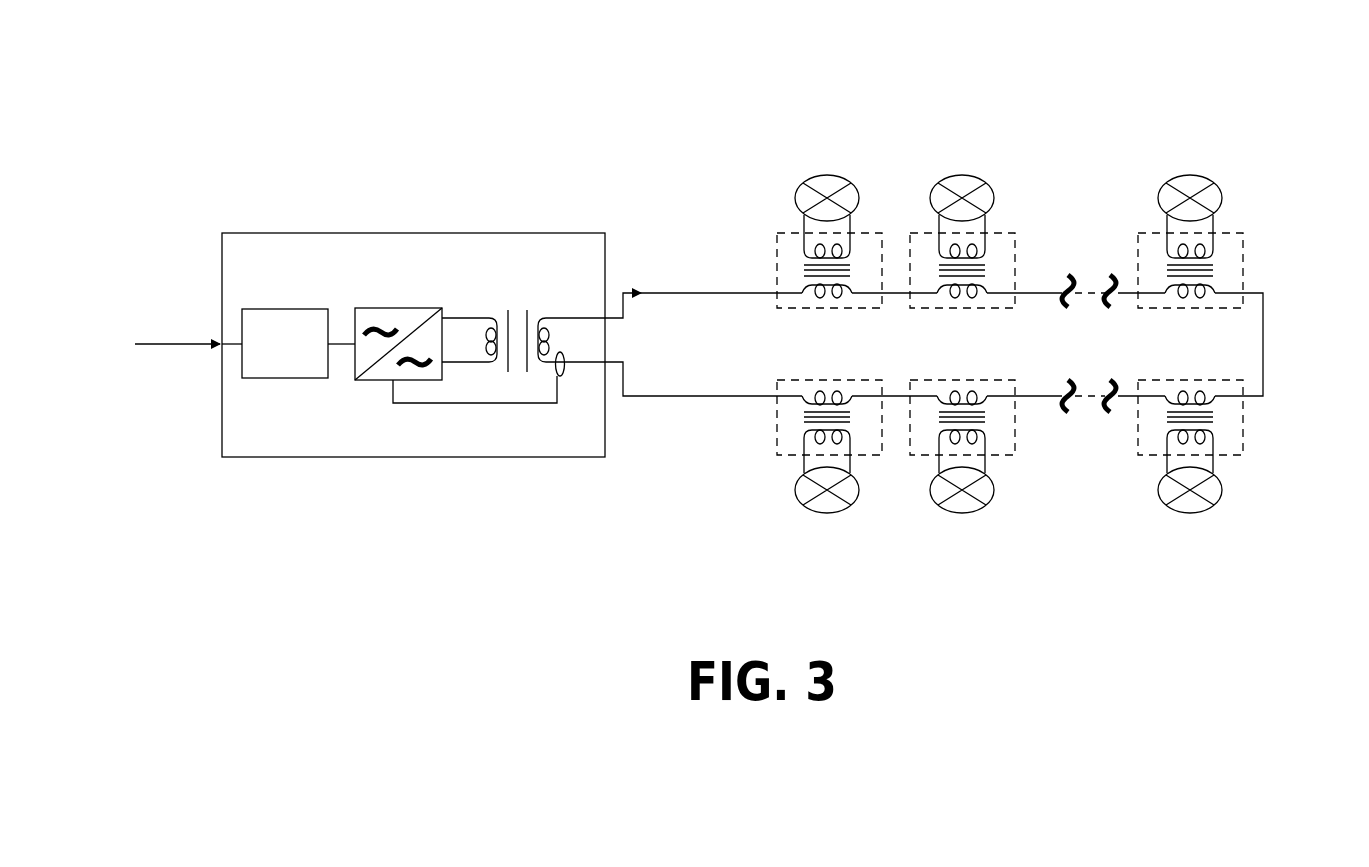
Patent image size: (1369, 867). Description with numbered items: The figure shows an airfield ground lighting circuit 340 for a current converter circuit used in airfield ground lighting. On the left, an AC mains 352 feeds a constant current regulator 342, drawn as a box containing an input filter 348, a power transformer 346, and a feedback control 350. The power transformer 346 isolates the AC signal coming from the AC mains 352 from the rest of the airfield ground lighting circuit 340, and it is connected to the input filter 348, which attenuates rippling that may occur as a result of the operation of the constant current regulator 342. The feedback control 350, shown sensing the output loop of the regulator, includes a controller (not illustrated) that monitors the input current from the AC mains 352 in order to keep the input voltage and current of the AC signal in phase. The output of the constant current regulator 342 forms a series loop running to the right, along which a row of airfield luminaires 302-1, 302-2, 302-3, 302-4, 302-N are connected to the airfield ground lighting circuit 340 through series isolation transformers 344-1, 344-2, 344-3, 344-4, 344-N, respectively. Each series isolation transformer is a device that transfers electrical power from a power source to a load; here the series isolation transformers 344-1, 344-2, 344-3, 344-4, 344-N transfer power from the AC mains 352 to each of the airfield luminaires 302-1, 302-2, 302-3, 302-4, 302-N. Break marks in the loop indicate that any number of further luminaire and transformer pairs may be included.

The airfield ground lighting circuit 340 is at (326, 114).
The constant current regulator 342 is at (221, 442).
The series isolation transformer 344-1 is at (777, 298).
The series isolation transformer 344-2 is at (1015, 297).
The series isolation transformer 344-3 is at (777, 432).
The series isolation transformer 344-4 is at (1015, 432).
The series isolation transformer 344-N is at (1243, 257).
The power transformer 346 is at (503, 288).
The input filter 348 is at (287, 292).
The feedback control 350 is at (475, 404).
The AC mains 352 is at (148, 345).
The airfield luminaire 302-1 is at (833, 175).
The airfield luminaire 302-2 is at (968, 175).
The airfield luminaire 302-3 is at (823, 513).
The airfield luminaire 302-4 is at (958, 513).
The airfield luminaire 302-N is at (1196, 175).